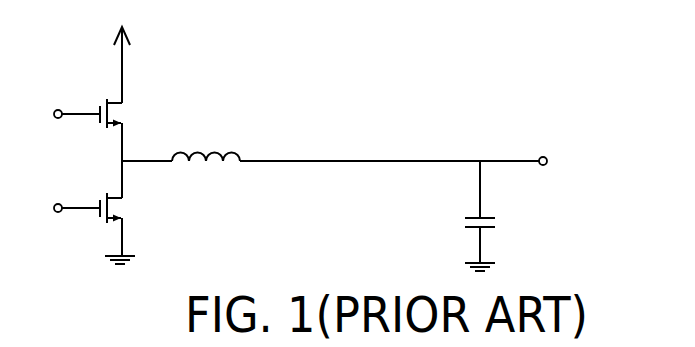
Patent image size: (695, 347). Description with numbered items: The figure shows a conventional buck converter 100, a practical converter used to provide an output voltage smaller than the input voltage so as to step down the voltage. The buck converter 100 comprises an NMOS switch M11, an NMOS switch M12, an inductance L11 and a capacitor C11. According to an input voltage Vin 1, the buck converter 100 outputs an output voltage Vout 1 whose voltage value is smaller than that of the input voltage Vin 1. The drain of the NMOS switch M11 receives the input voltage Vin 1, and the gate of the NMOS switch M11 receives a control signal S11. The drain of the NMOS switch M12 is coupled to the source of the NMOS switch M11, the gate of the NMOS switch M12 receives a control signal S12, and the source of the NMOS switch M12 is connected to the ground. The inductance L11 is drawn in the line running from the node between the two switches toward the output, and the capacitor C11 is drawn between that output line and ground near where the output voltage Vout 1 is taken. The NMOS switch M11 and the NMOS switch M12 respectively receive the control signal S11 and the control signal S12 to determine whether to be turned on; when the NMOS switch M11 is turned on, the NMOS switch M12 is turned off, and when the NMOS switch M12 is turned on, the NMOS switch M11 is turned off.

The buck converter 100 is at (653, 282).
The input voltage Vin 1 is at (135, 51).
The output voltage Vout 1 is at (581, 165).
The control signal S11 is at (56, 115).
The control signal S12 is at (56, 209).
The NMOS switch M11 is at (130, 113).
The NMOS switch M12 is at (130, 208).
The inductance L11 is at (206, 142).
The capacitor C11 is at (501, 224).